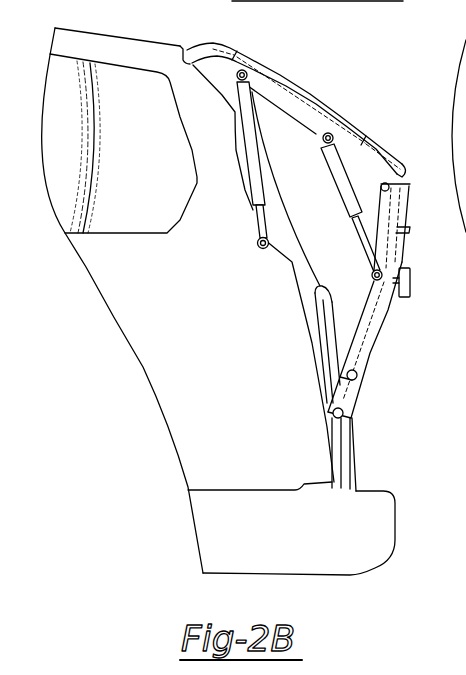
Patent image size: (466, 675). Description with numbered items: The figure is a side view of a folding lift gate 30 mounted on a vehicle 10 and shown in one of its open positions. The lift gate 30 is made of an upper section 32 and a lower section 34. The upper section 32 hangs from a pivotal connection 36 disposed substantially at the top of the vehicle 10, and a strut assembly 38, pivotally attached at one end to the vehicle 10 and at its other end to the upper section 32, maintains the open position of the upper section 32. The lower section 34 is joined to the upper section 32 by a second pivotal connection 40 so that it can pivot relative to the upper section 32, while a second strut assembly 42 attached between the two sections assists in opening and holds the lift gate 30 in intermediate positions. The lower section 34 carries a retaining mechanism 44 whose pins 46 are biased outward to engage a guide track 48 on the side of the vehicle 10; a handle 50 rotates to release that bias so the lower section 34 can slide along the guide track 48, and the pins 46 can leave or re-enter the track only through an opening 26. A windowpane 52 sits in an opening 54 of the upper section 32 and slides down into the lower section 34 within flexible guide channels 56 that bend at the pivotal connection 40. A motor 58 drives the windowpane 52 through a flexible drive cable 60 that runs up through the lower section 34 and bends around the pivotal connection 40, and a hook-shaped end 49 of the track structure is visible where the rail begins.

The vehicle 10 is at (85, 48).
The pivotal connection 36 is at (183, 36).
The lift gate 30 is at (305, 70).
The windowpane 52 is at (245, 55).
The opening 54 is at (315, 107).
The upper section 32 is at (365, 143).
The pivotal connection 40 is at (406, 180).
The opening 26 is at (278, 178).
The strut assembly 38 is at (252, 192).
The strut assembly 42 is at (343, 190).
The guide channels 56 is at (402, 232).
The handle 50 is at (409, 284).
The flexible drive cable 60 is at (394, 329).
The lower section 34 is at (372, 351).
The retaining mechanism 44 is at (358, 390).
The motor 58 is at (358, 375).
The guide track 48 is at (318, 336).
The rail hook end 49 is at (327, 290).
The pins 46 is at (330, 428).